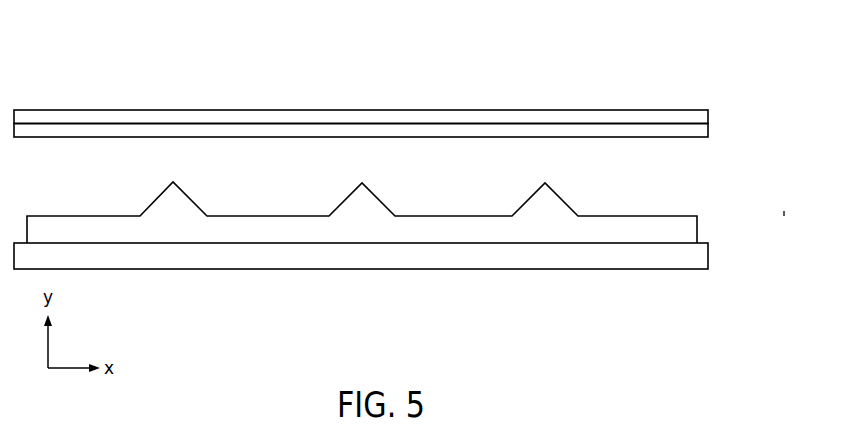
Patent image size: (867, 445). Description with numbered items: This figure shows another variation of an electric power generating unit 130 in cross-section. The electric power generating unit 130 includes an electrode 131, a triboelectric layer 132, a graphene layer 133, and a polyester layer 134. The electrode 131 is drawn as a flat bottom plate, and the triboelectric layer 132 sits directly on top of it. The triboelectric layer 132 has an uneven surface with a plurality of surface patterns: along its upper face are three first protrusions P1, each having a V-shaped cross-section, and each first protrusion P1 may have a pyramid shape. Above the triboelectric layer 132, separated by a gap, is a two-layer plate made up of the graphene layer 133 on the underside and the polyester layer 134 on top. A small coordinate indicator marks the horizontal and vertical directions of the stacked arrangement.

The electric power generating unit 130 is at (464, 76).
The electrode 131 is at (693, 262).
The triboelectric layer 132 is at (688, 237).
The graphene layer 133 is at (697, 132).
The polyester layer 134 is at (697, 116).
The first protrusion P1 is at (382, 202).